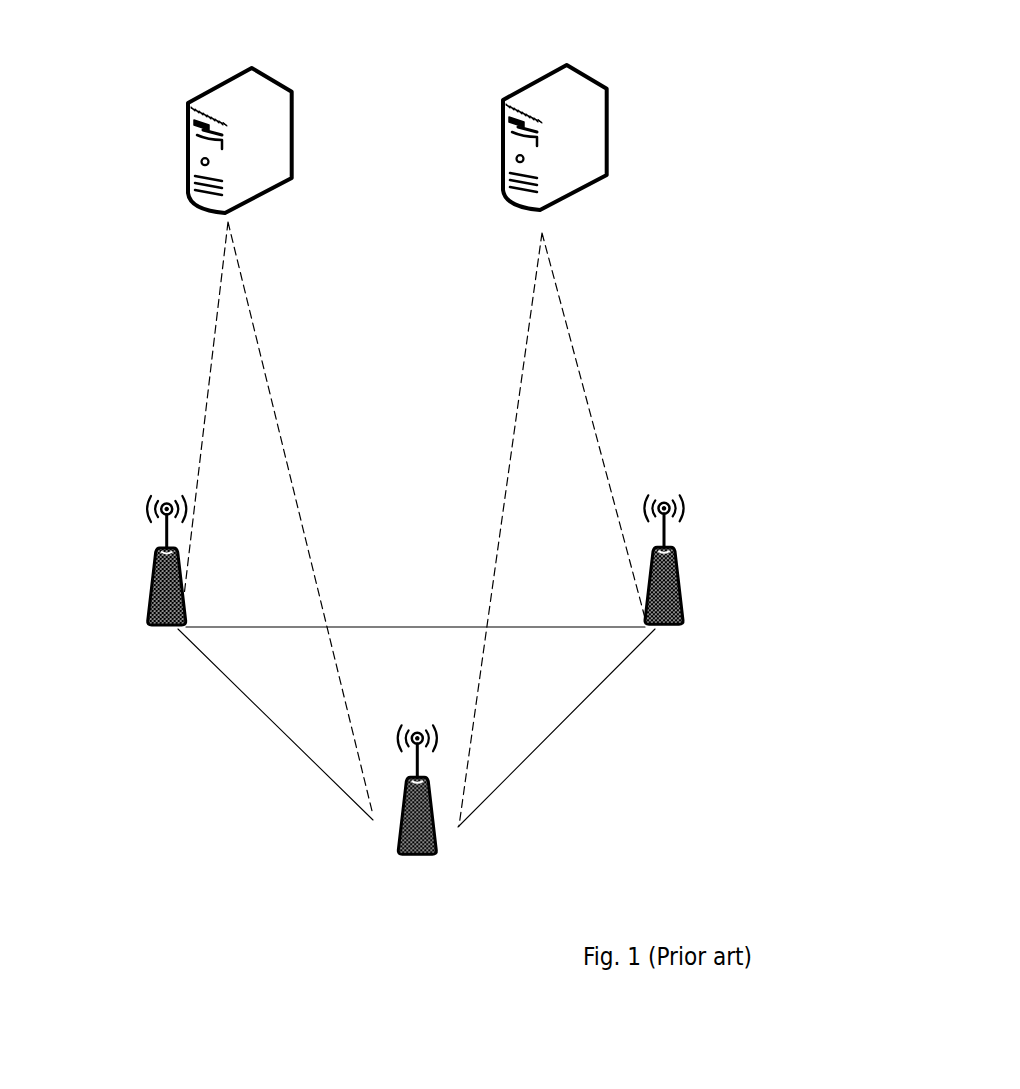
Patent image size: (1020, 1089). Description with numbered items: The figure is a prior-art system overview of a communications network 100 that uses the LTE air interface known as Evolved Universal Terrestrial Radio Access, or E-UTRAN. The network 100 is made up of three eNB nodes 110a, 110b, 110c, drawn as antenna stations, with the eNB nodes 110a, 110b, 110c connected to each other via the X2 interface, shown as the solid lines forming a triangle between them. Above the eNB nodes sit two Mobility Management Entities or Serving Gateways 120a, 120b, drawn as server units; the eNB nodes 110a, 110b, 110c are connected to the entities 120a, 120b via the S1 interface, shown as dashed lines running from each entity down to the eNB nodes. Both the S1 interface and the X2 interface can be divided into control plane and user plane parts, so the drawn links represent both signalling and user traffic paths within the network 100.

The communications network 100 is at (188, 770).
The eNB node 110a is at (150, 590).
The eNB node 110b is at (397, 820).
The eNB node 110c is at (682, 592).
The Mobility Management Entity or Serving Gateway 120a is at (213, 80).
The Mobility Management Entity or Serving Gateway 120b is at (540, 75).